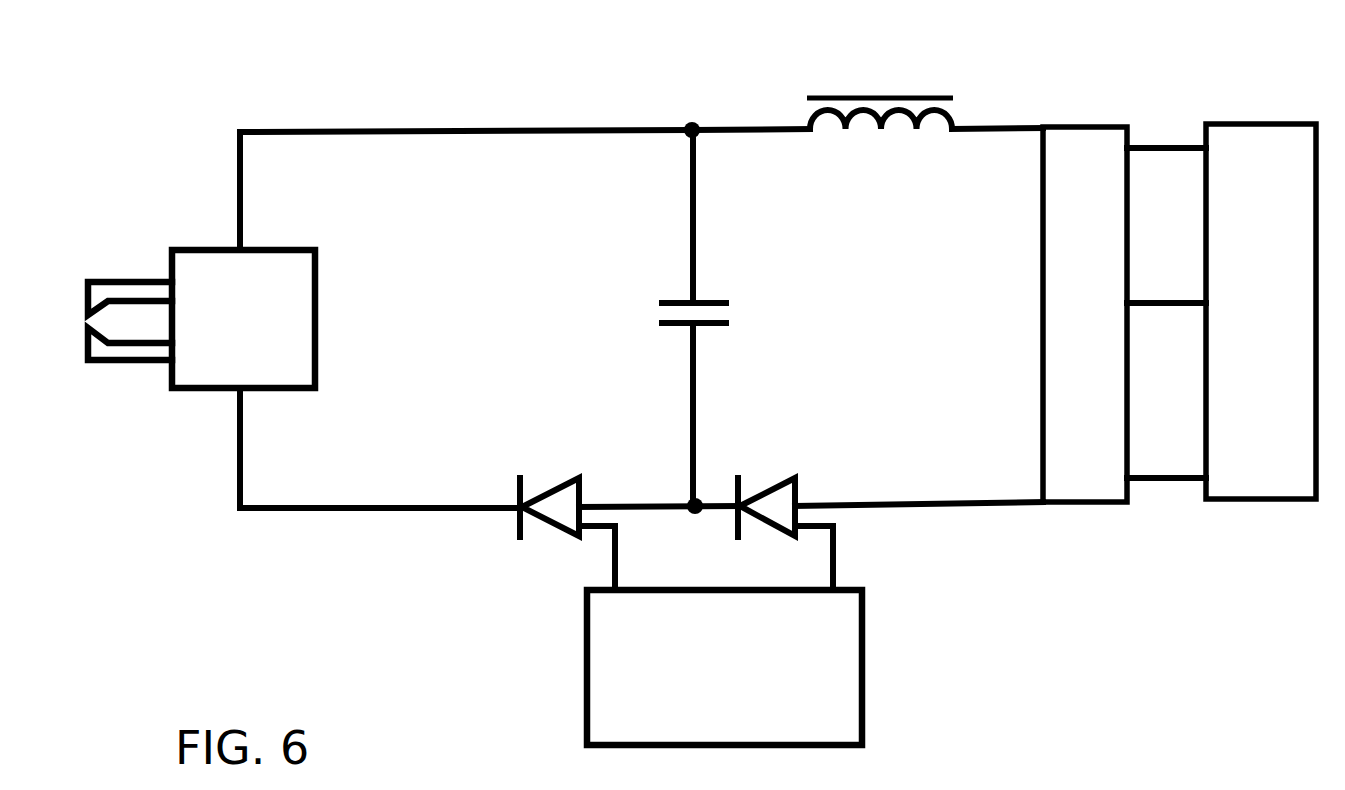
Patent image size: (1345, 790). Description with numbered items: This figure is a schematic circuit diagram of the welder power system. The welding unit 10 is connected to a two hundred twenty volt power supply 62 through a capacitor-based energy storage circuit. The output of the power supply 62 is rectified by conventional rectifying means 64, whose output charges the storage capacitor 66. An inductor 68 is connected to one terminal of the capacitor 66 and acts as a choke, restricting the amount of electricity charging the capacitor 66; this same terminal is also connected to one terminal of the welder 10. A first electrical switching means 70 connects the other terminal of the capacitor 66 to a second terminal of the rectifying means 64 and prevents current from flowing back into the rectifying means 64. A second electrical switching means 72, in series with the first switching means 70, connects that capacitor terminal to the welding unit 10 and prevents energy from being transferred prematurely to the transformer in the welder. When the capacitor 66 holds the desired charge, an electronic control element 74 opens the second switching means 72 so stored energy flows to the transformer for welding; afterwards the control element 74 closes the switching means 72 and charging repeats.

The welding unit 10 is at (243, 319).
The power supply 62 is at (1261, 285).
The rectifying means 64 is at (1085, 283).
The storage capacitor 66 is at (737, 318).
The inductor 68 is at (896, 75).
The first electrical switching means 70 is at (804, 507).
The second electrical switching means 72 is at (572, 507).
The electronic control element 74 is at (773, 667).